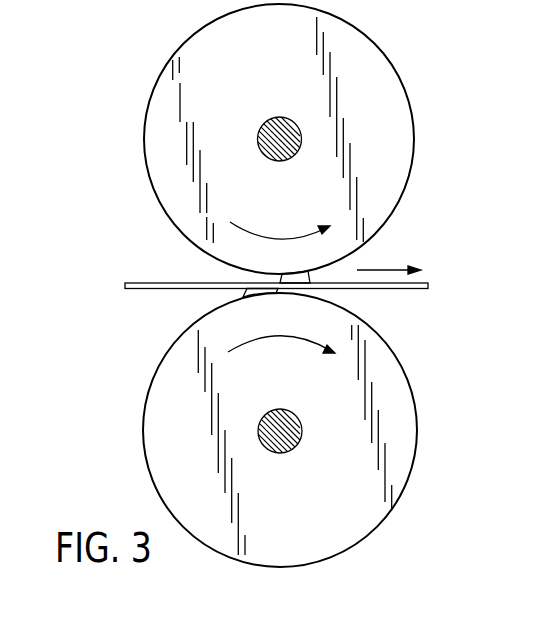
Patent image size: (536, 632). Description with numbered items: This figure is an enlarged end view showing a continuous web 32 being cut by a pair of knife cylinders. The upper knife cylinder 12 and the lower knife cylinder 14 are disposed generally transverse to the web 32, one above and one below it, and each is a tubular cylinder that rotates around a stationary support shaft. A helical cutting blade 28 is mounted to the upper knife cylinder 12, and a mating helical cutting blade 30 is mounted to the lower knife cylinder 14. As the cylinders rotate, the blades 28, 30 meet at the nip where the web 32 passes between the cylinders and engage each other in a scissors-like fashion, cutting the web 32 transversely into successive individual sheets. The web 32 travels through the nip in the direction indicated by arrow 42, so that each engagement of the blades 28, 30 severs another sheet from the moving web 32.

The upper knife cylinder 12 is at (357, 57).
The lower knife cylinder 14 is at (342, 534).
The helical cutting blade 28 is at (308, 274).
The mating helical cutting blade 30 is at (246, 294).
The continuous web 32 is at (142, 284).
The arrow 42 is at (382, 270).